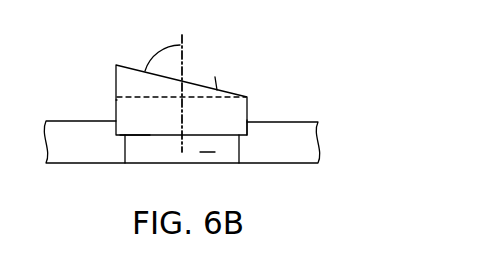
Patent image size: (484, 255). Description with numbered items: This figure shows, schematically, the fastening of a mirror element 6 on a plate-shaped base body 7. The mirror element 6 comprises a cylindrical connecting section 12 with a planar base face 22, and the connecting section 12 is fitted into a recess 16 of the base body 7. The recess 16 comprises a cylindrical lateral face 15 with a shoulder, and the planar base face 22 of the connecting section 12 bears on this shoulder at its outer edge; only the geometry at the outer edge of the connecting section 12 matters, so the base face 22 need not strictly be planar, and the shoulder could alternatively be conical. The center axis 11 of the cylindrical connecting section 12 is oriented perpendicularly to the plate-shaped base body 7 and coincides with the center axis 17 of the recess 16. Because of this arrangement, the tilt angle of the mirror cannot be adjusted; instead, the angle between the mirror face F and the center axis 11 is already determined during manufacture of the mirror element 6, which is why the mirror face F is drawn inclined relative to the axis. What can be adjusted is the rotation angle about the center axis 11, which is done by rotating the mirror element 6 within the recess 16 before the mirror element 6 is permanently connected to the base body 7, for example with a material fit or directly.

The mirror element 6 is at (106, 70).
The base body 7 is at (90, 143).
The center axis 11 is at (234, 84).
The center axis of the recess 17 is at (183, 42).
The cylindrical connecting section 12 is at (165, 125).
The planar base face 22 is at (134, 130).
The mirror face F is at (217, 90).
The recess 16 is at (211, 146).
The cylindrical lateral face 15 is at (254, 128).